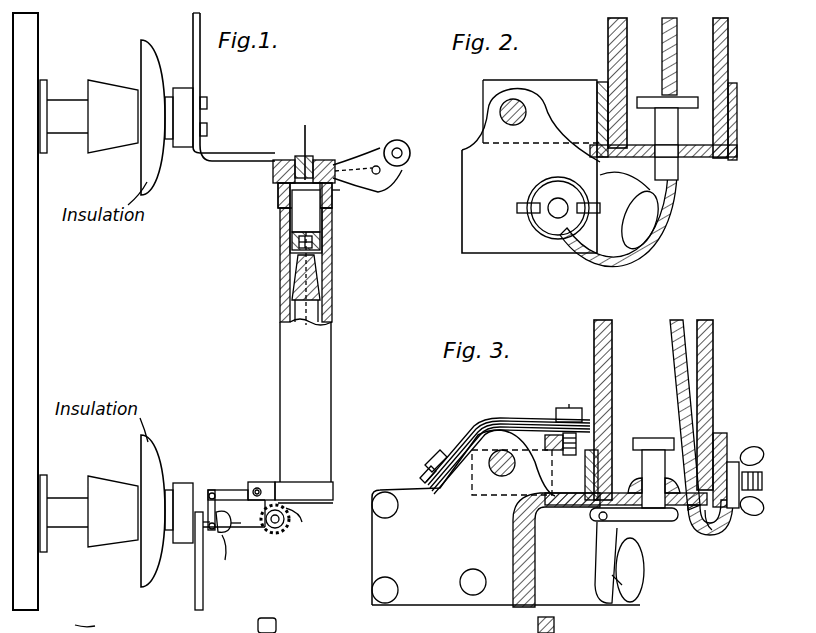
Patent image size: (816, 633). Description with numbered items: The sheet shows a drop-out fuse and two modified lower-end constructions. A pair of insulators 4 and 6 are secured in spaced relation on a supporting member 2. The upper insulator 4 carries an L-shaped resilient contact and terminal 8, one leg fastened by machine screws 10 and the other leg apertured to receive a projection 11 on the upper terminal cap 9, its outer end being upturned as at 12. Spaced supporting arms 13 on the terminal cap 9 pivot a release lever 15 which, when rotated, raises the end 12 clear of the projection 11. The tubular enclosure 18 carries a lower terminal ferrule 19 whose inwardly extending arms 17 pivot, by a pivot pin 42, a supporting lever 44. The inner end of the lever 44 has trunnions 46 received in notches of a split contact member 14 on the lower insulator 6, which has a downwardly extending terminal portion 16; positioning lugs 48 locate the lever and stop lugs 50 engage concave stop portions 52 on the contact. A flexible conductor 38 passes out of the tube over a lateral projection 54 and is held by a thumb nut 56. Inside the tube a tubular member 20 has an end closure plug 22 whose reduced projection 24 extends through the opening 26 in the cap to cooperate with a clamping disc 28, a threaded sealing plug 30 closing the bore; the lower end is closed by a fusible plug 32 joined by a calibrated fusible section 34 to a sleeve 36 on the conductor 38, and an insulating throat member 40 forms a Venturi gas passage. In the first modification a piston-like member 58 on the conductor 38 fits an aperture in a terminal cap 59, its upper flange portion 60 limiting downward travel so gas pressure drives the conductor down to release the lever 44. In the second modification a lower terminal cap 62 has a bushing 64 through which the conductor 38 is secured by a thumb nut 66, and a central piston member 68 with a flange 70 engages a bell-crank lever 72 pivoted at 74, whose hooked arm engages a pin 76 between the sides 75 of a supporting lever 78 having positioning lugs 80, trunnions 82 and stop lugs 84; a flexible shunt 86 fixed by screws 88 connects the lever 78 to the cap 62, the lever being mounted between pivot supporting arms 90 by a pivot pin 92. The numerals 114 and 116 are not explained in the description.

In FIG. 1, the supporting member 2 is at (40, 292).
In FIG. 1, the upper insulator 4 is at (146, 60).
In FIG. 1, the lower insulator 6 is at (140, 445).
In FIG. 1, the resilient contact and terminal 8 is at (200, 70).
In FIG. 1, the terminal cap 9 is at (334, 192).
In FIG. 1, the machine screws 10 is at (207, 130).
In FIG. 1, the projection 11 is at (306, 144).
In FIG. 1, the upturned outer end 12 is at (372, 158).
In FIG. 1, the supporting arms 13 is at (362, 188).
In FIG. 1, the split contact member 14 is at (212, 530).
In FIG. 1, the release lever 15 is at (400, 167).
In FIG. 1, the terminal portion 16 is at (203, 607).
In FIG. 1, the arms 17 is at (271, 483).
In FIG. 2, the arms 17 is at (565, 92).
In FIG. 1, the tubular enclosure 18 is at (332, 322).
In FIG. 2, the tubular enclosure 18 is at (728, 52).
In FIG. 3, the tubular enclosure 18 is at (714, 362).
In FIG. 1, the terminal ferrule 19 is at (333, 492).
In FIG. 1, the tubular member 20 is at (332, 220).
In FIG. 1, the end closure plug 22 is at (280, 205).
In FIG. 1, the reduced projection 24 is at (278, 177).
In FIG. 1, the opening 26 is at (320, 162).
In FIG. 1, the clamping disc 28 is at (283, 162).
In FIG. 1, the sealing plug 30 is at (300, 158).
In FIG. 1, the fusible plug 32 is at (306, 211).
In FIG. 1, the calibrated fusible section 34 is at (322, 248).
In FIG. 1, the sleeve 36 is at (299, 242).
In FIG. 1, the flexible conductor 38 is at (292, 305).
In FIG. 2, the flexible conductor 38 is at (664, 52).
In FIG. 3, the flexible conductor 38 is at (722, 528).
In FIG. 1, the insulating throat member 40 is at (322, 282).
In FIG. 1, the pivot pin 42 is at (252, 490).
In FIG. 2, the pivot pin 42 is at (503, 109).
In FIG. 1, the supporting lever 44 is at (263, 528).
In FIG. 2, the supporting lever 44 is at (500, 254).
In FIG. 1, the trunnions 46 is at (225, 532).
In FIG. 1, the positioning lugs 48 is at (210, 490).
In FIG. 1, the stop lugs 50 is at (236, 521).
In FIG. 1, the concave stop portions 52 is at (234, 556).
In FIG. 1, the lateral projection 54 is at (302, 520).
In FIG. 2, the lateral projection 54 is at (635, 255).
In FIG. 1, the thumb nut 56 is at (283, 525).
In FIG. 2, the thumb nut 56 is at (553, 227).
In FIG. 2, the piston-like member 58 is at (678, 172).
In FIG. 2, the terminal cap 59 is at (737, 125).
In FIG. 2, the upper flange portion 60 is at (688, 97).
In FIG. 3, the lower terminal cap 62 is at (728, 442).
In FIG. 3, the bushing 64 is at (707, 530).
In FIG. 3, the thumb nut 66 is at (758, 512).
In FIG. 3, the piston member 68 is at (645, 461).
In FIG. 3, the flange 70 is at (653, 437).
In FIG. 3, the bell-crank lever 72 is at (653, 522).
In FIG. 3, the pivot 74 is at (590, 530).
In FIG. 3, the sides 75 is at (586, 604).
In FIG. 3, the pin 76 is at (622, 578).
In FIG. 3, the supporting lever 78 is at (424, 545).
In FIG. 3, the positioning lugs 80 is at (384, 504).
In FIG. 3, the trunnions 82 is at (386, 592).
In FIG. 3, the stop lugs 84 is at (473, 584).
In FIG. 3, the flexible shunt 86 is at (482, 424).
In FIG. 3, the screws 88 is at (440, 452).
In FIG. 3, the pivot supporting arms 90 is at (535, 425).
In FIG. 3, the pivot pin 92 is at (500, 478).
In FIG. 1, the base 114 is at (21, 621).
In FIG. 1, the stud 116 is at (76, 628).